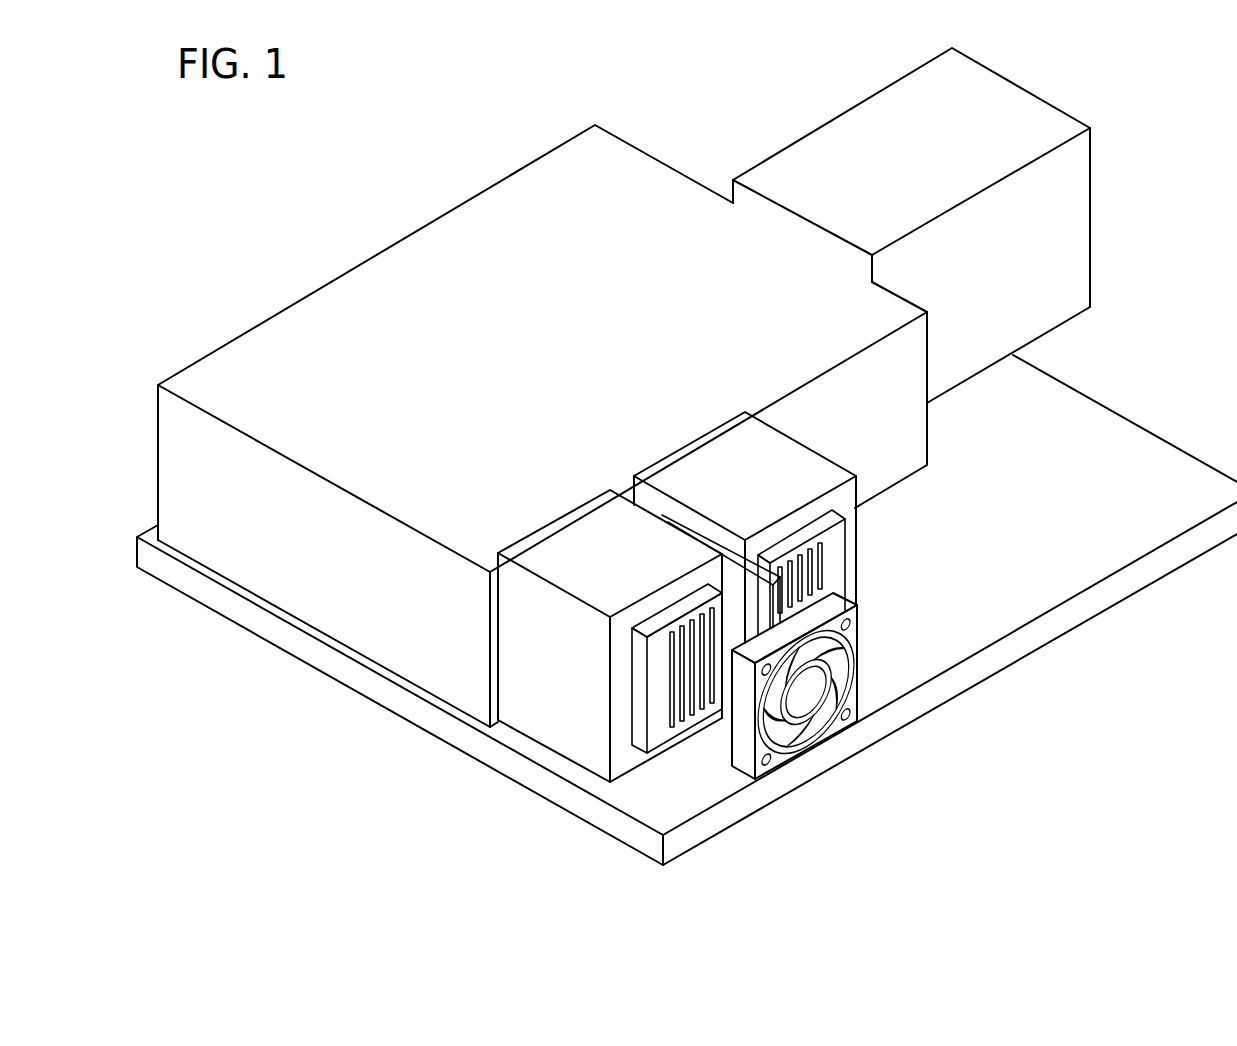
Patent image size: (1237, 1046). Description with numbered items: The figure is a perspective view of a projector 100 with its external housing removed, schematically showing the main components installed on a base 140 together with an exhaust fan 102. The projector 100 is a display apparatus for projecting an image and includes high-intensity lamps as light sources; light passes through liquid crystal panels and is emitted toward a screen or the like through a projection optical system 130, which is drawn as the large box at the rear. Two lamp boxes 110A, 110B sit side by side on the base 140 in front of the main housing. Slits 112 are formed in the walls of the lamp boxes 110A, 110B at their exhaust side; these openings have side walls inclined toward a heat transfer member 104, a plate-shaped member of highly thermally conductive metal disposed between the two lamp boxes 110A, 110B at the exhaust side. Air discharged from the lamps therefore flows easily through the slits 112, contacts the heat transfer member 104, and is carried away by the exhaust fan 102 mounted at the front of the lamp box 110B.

The projector 100 is at (254, 133).
The exhaust fan 102 is at (798, 737).
The heat transfer member 104 is at (738, 588).
The lamp box 110A is at (568, 720).
The lamp box 110B is at (725, 457).
The slits 112 is at (692, 703).
The projection optical system 130 is at (1067, 227).
The base 140 is at (985, 665).